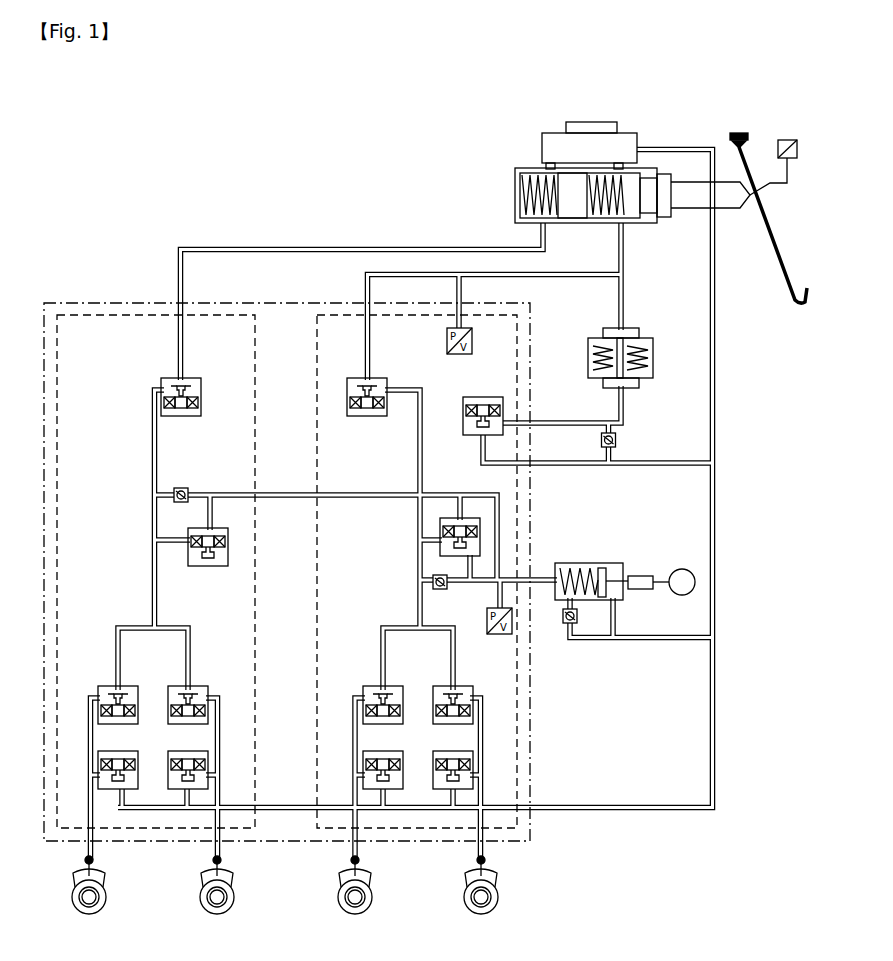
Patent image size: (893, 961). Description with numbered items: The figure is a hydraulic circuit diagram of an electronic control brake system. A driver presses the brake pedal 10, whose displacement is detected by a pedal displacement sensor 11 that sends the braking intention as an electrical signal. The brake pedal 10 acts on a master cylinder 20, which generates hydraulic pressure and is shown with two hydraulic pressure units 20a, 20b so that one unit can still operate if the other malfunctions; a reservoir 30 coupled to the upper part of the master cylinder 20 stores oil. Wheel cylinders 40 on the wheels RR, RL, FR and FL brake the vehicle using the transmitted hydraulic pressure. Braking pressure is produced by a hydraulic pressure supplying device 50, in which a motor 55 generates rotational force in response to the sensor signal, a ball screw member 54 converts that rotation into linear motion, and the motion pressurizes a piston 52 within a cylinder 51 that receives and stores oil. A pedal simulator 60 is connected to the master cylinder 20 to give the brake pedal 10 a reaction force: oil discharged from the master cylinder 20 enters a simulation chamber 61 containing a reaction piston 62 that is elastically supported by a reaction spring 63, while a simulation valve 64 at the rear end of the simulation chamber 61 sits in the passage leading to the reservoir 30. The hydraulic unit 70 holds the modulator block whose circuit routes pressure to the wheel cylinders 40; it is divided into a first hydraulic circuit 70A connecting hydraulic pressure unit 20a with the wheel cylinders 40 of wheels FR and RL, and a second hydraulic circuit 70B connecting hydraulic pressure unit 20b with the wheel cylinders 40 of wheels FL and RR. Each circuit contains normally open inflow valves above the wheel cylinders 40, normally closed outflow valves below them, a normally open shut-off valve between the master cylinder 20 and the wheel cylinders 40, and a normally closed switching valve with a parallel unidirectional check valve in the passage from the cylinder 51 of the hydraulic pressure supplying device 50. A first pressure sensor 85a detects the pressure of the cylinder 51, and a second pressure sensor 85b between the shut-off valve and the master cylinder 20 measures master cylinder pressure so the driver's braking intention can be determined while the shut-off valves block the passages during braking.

The brake pedal 10 is at (772, 240).
The pedal displacement sensor 11 is at (788, 140).
The master cylinder 20 is at (608, 158).
The hydraulic pressure unit 20a is at (599, 185).
The hydraulic pressure unit 20b is at (538, 185).
The reservoir 30 is at (555, 133).
The wheel cylinders 40 is at (202, 873).
The hydraulic pressure supplying device 50 is at (626, 563).
The cylinder 51 is at (570, 563).
The piston 52 is at (602, 597).
The ball screw member 54 is at (641, 576).
The motor 55 is at (681, 596).
The pedal simulator 60 is at (643, 390).
The simulation chamber 61 is at (650, 362).
The reaction piston 62 is at (650, 341).
The reaction spring 63 is at (645, 365).
The simulation valve 64 is at (484, 397).
The hydraulic unit 70 is at (288, 302).
The first hydraulic circuit 70A is at (343, 316).
The second hydraulic circuit 70B is at (98, 316).
The first pressure sensor 85a is at (500, 633).
The second pressure sensor 85b is at (447, 341).